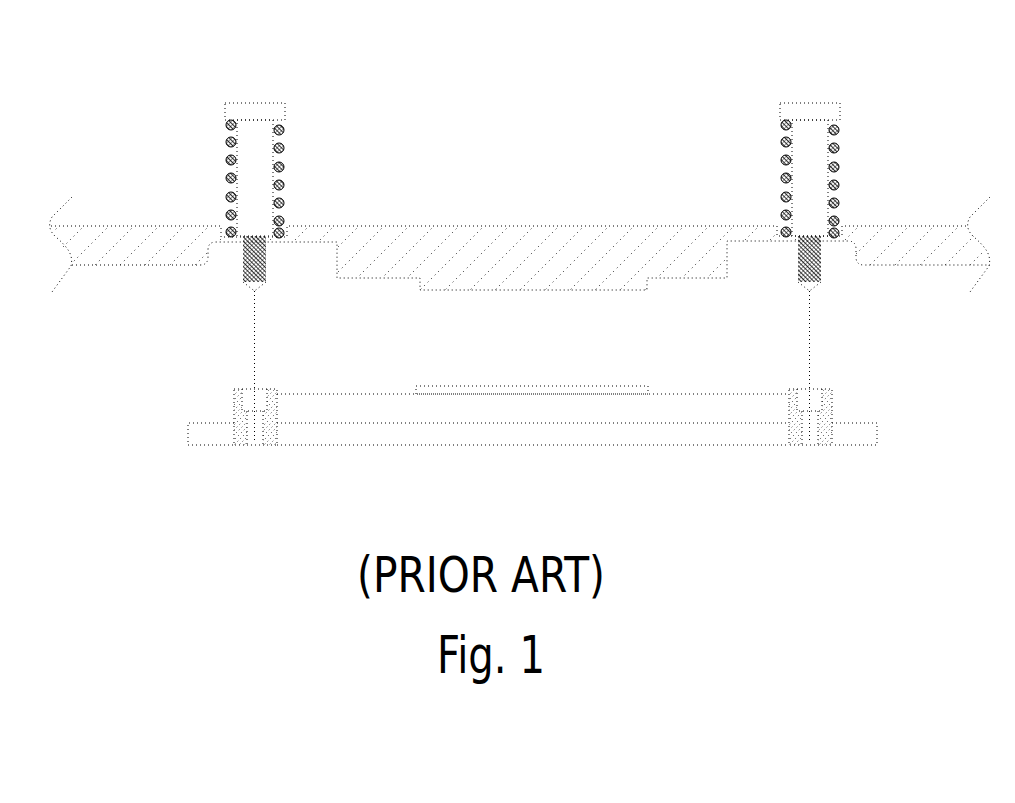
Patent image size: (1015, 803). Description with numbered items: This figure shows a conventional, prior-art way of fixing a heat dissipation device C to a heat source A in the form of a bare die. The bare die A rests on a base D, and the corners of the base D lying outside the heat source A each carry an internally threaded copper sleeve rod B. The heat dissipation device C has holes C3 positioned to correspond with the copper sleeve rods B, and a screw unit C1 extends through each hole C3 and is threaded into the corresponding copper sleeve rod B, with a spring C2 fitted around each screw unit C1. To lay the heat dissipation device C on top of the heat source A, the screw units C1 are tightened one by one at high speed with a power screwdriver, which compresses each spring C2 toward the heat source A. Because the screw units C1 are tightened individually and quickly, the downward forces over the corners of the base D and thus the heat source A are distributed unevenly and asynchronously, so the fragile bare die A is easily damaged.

The heat dissipation device C is at (173, 227).
The screw unit C1 is at (238, 116).
The spring C2 is at (283, 128).
The hole C3 is at (213, 243).
The heat source A is at (450, 386).
The copper sleeve rod B is at (235, 410).
The base D is at (208, 437).